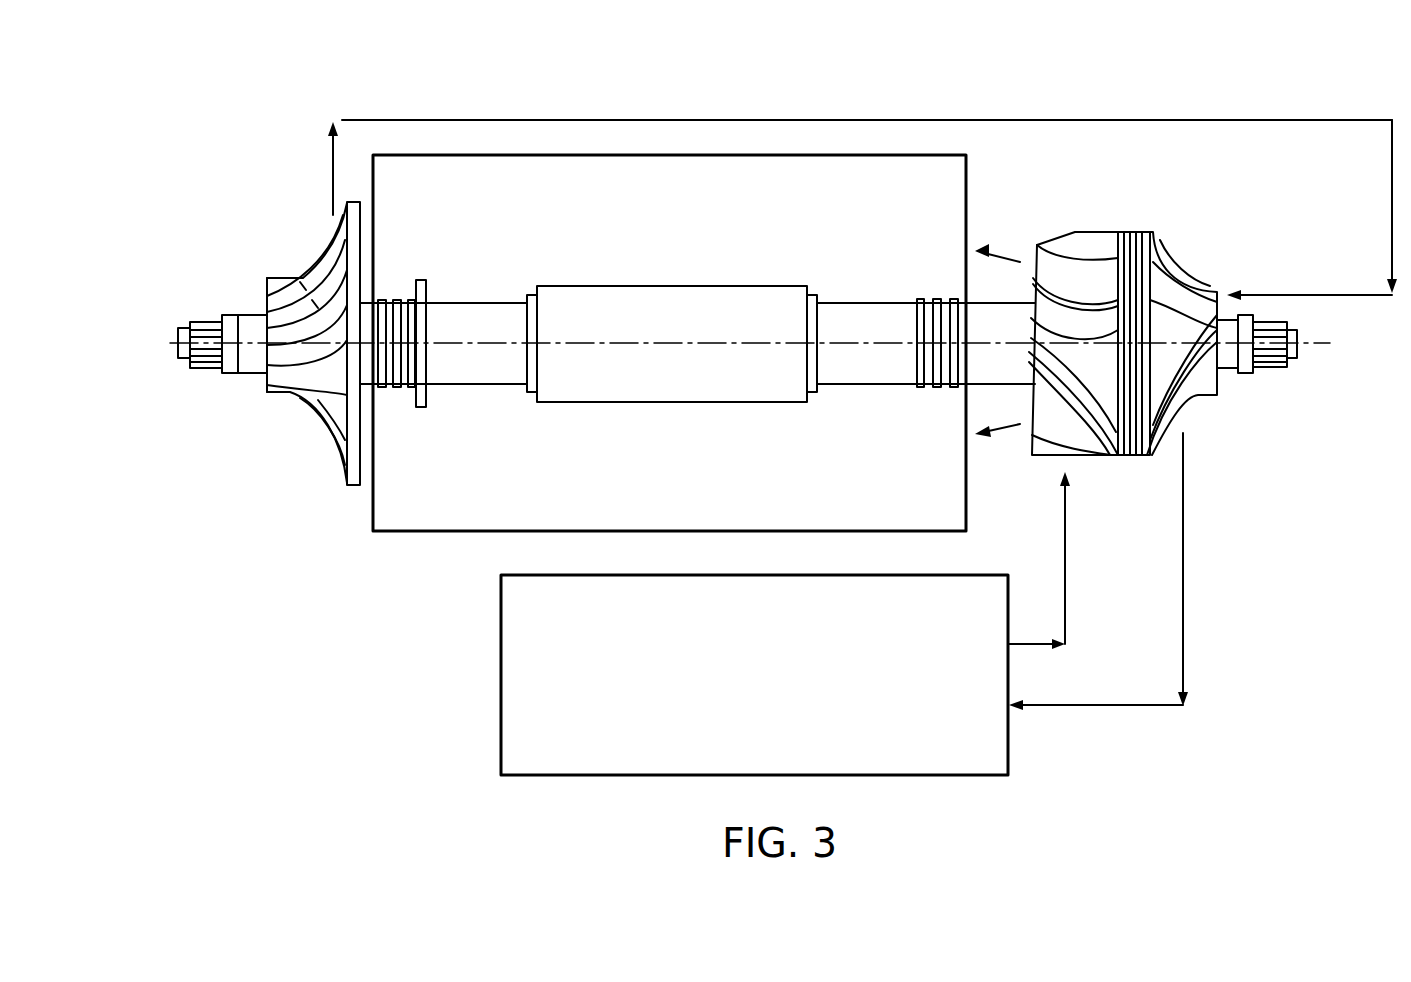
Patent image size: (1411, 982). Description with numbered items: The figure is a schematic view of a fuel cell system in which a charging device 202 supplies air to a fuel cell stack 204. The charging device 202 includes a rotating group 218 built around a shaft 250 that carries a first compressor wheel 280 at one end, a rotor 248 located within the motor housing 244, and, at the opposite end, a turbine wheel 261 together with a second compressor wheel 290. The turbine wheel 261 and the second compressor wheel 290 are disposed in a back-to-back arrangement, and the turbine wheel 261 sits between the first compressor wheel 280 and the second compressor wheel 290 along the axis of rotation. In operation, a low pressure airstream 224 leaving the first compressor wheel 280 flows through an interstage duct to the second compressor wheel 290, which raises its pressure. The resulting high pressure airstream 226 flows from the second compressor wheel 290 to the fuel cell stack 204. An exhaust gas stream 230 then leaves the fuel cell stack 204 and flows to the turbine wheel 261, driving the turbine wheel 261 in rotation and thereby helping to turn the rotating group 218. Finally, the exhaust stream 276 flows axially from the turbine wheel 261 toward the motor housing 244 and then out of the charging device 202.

The charging device 202 is at (158, 334).
The fuel cell stack 204 is at (500, 679).
The rotating group 218 is at (481, 397).
The low pressure airstream 224 is at (430, 120).
The high pressure airstream 226 is at (1184, 593).
The exhaust gas stream 230 is at (1066, 593).
The motor housing 244 is at (967, 196).
The rotor 248 is at (714, 285).
The shaft 250 is at (467, 312).
The turbine wheel 261 is at (1053, 461).
The exhaust stream 276 is at (1006, 428).
The first compressor wheel 280 is at (281, 394).
The second compressor wheel 290 is at (1193, 398).